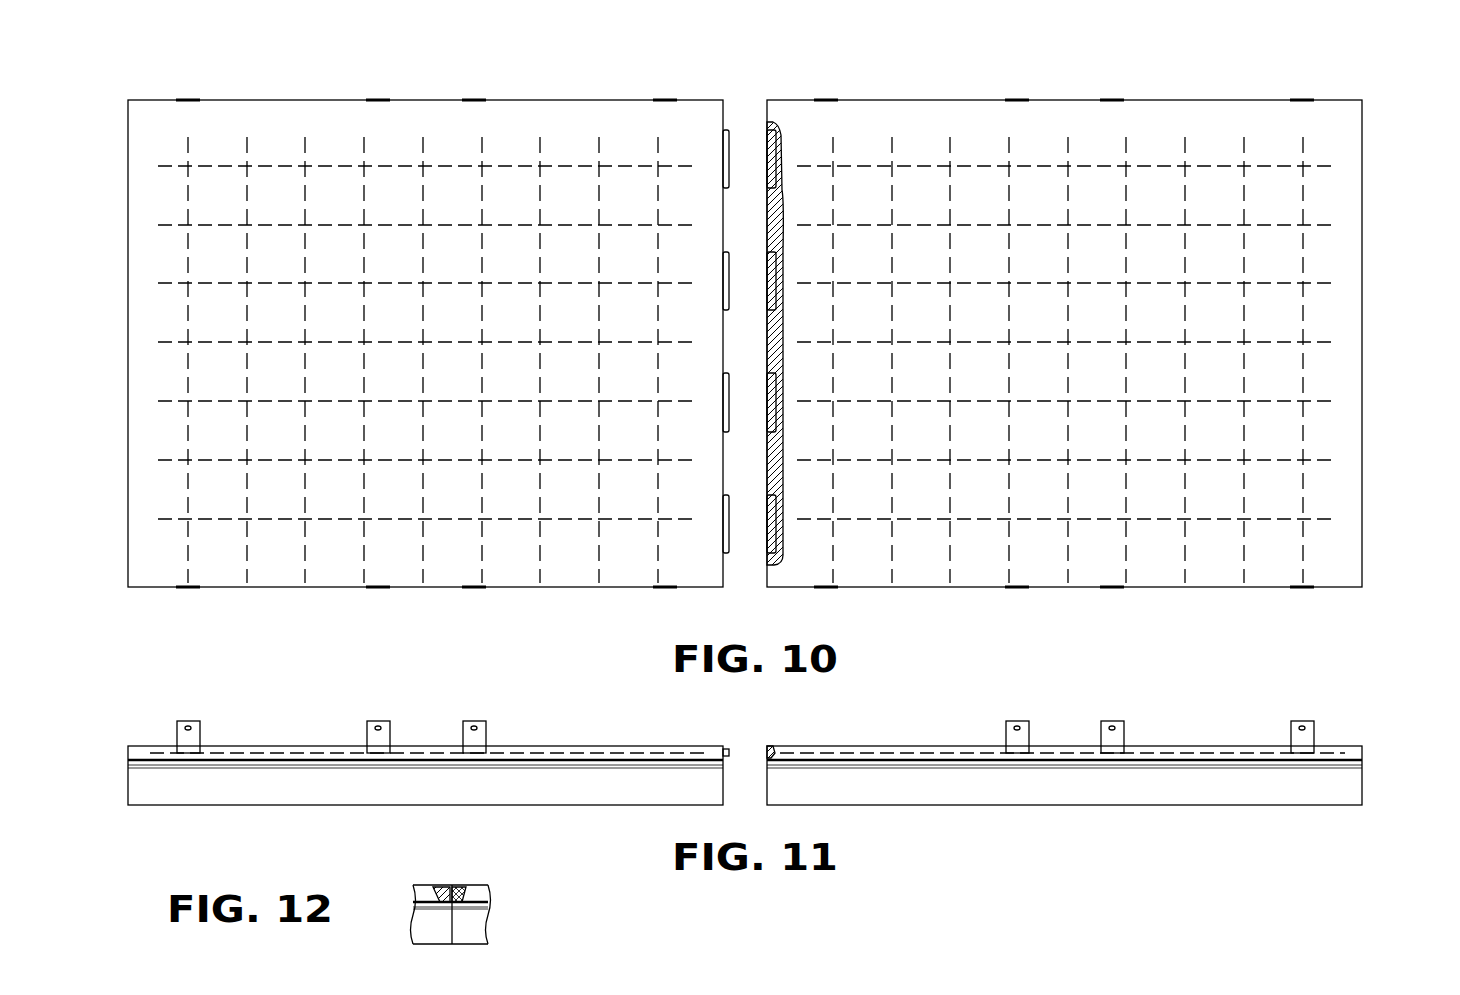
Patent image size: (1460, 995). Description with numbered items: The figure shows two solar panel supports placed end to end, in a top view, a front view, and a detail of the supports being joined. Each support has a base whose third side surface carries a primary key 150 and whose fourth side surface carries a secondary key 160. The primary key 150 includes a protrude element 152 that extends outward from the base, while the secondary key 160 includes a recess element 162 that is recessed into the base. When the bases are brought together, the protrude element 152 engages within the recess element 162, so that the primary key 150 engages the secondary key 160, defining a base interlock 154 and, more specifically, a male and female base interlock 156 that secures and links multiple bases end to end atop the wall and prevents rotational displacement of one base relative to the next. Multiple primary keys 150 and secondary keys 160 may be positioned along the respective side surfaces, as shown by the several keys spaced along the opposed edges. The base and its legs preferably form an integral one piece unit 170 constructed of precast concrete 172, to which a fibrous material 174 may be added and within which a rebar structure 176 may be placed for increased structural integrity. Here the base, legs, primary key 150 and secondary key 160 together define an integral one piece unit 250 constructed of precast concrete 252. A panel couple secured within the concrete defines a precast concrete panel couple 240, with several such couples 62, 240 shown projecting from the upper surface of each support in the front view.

In FIG. 10, the primary key 150 is at (723, 290).
In FIG. 11, the primary key 150 is at (726, 750).
In FIG. 10, the protrude element 152 is at (723, 277).
In FIG. 10, the secondary key 160 is at (780, 136).
In FIG. 11, the secondary key 160 is at (771, 750).
In FIG. 10, the recess element 162 is at (785, 178).
In FIG. 10, the integral one piece unit 170 is at (145, 218).
In FIG. 10, the precast concrete 172 is at (140, 272).
In FIG. 10, the fibrous material 174 is at (145, 345).
In FIG. 10, the rebar structure 176 is at (165, 402).
In FIG. 10, the integral one piece unit 250 is at (283, 120).
In FIG. 10, the precast concrete 252 is at (343, 120).
In FIG. 11, the precast concrete panel couple 240 is at (187, 721).
In FIG. 11, the fastener clip 62 is at (367, 735).
In FIG. 12, the base interlock 154 is at (462, 887).
In FIG. 12, the male and female base interlock 156 is at (445, 887).